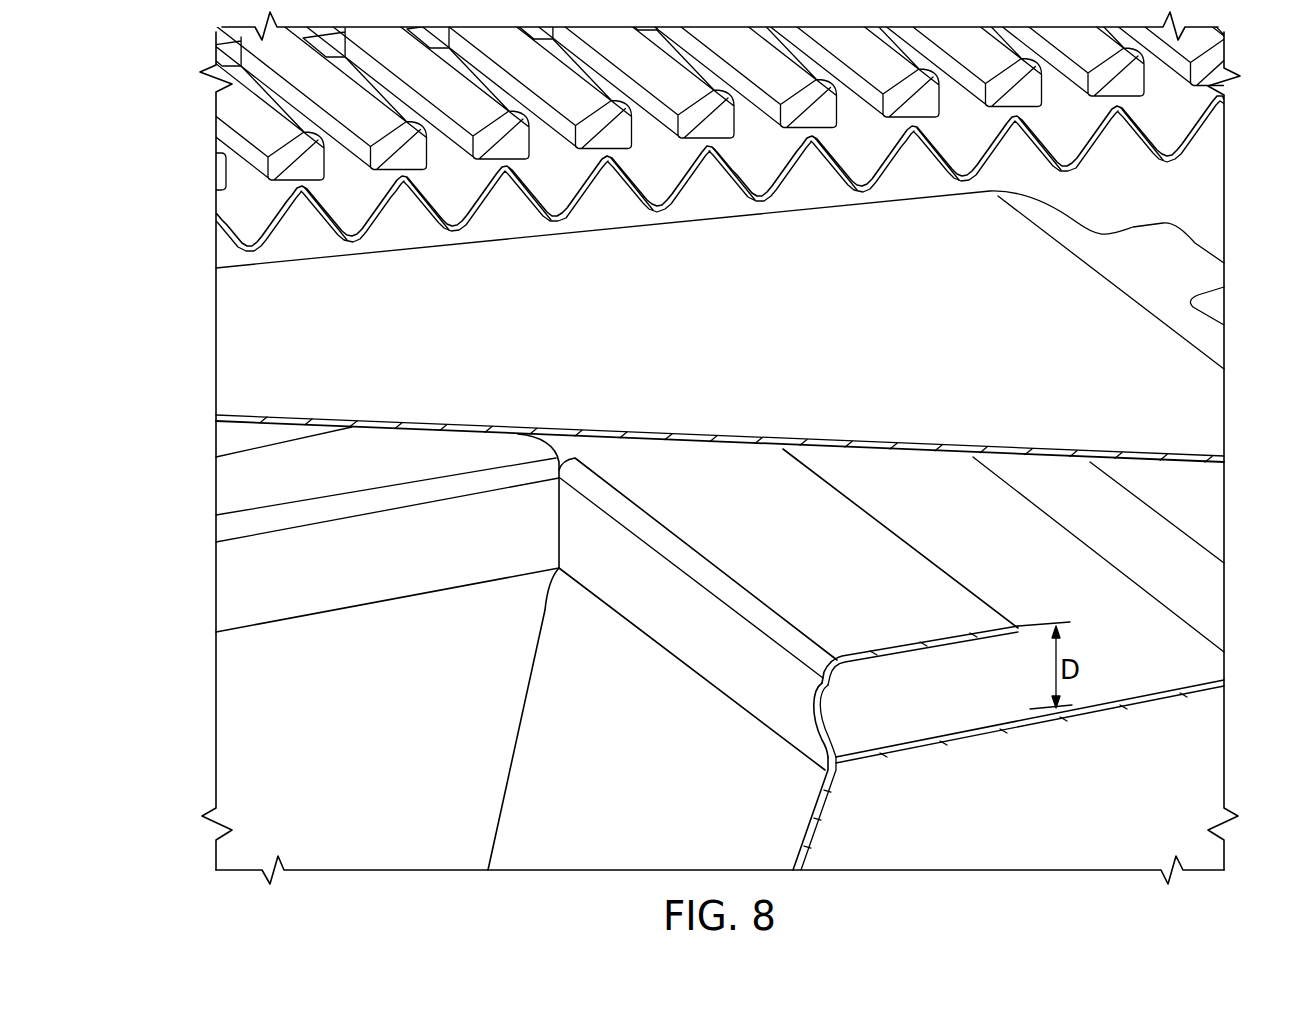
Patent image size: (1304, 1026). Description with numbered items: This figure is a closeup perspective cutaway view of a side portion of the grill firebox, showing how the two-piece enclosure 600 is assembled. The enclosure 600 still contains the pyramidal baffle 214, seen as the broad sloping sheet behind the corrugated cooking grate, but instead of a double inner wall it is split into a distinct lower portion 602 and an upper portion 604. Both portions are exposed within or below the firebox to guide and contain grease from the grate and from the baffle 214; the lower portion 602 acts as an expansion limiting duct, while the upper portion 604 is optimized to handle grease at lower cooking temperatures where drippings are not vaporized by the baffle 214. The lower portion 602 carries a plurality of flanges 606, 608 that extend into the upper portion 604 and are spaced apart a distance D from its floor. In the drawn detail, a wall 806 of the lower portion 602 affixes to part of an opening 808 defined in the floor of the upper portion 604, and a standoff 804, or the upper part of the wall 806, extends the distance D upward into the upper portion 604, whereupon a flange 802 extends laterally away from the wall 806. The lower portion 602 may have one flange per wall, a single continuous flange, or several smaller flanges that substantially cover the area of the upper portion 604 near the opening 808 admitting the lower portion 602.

The baffle 214 is at (822, 329).
The enclosure 600 is at (823, 804).
The lower portion 602 is at (232, 746).
The upper portion 604 is at (1206, 750).
The flange 606 is at (937, 578).
The flange 608 is at (232, 488).
The flange 802 is at (812, 554).
The standoff 804 is at (686, 646).
The wall 806 is at (660, 804).
The opening 808 is at (824, 710).